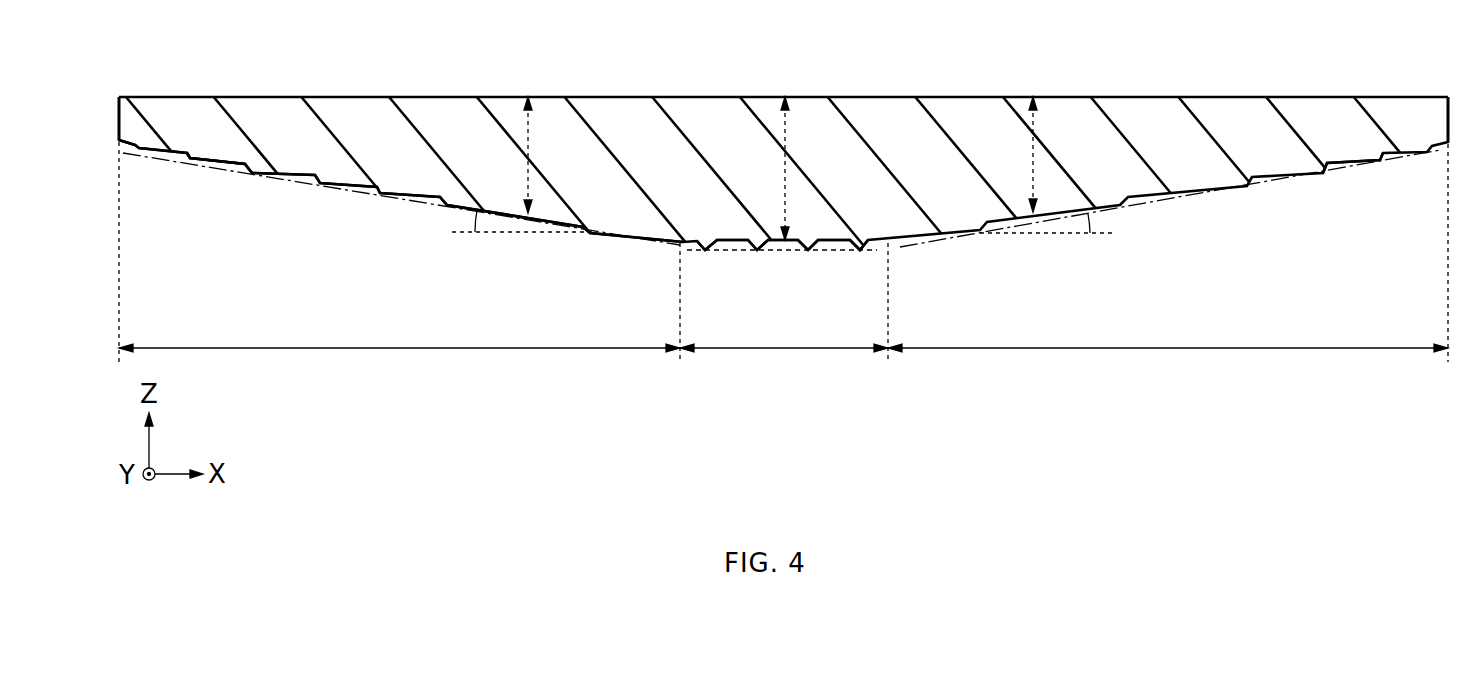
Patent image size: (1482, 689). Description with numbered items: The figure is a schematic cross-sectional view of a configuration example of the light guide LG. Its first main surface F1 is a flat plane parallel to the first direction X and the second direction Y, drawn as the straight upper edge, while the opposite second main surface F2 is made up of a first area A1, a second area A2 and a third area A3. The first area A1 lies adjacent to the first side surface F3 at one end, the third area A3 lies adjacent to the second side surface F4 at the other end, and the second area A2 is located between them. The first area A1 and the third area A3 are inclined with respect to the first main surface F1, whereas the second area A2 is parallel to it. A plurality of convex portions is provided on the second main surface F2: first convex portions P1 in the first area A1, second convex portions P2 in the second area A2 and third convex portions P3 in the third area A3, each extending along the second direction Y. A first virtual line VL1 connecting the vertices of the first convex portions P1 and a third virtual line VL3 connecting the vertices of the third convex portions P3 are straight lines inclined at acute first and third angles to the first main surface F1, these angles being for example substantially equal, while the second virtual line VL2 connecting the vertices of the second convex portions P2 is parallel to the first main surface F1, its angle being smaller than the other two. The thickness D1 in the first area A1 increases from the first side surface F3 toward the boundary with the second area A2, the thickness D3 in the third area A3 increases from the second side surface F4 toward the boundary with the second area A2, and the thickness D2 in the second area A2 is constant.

The light guide LG is at (280, 112).
The first main surface F1 is at (403, 88).
The second main surface F2 is at (404, 208).
The first side surface F3 is at (115, 88).
The second side surface F4 is at (1456, 88).
The first convex portions P1 is at (247, 173).
The second convex portions P2 is at (754, 252).
The third convex portions P3 is at (1368, 162).
The first virtual line VL1 is at (292, 182).
The second virtual line VL2 is at (809, 252).
The third virtual line VL3 is at (1262, 184).
The thickness in the first area D1 is at (511, 155).
The thickness in the second area D2 is at (768, 168).
The thickness in the third area D3 is at (1016, 154).
The first area A1 is at (399, 365).
The second area A2 is at (784, 365).
The third area A3 is at (1168, 365).